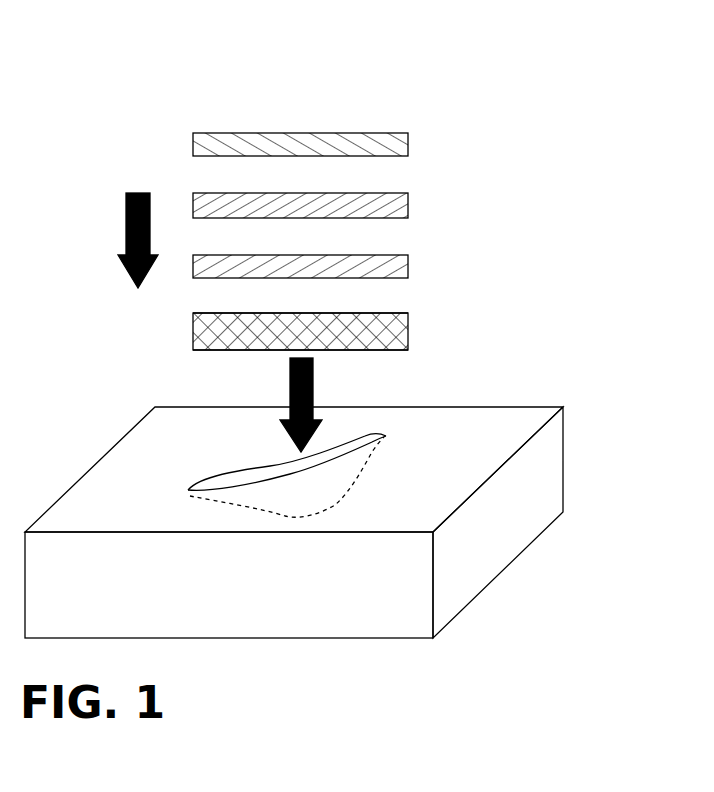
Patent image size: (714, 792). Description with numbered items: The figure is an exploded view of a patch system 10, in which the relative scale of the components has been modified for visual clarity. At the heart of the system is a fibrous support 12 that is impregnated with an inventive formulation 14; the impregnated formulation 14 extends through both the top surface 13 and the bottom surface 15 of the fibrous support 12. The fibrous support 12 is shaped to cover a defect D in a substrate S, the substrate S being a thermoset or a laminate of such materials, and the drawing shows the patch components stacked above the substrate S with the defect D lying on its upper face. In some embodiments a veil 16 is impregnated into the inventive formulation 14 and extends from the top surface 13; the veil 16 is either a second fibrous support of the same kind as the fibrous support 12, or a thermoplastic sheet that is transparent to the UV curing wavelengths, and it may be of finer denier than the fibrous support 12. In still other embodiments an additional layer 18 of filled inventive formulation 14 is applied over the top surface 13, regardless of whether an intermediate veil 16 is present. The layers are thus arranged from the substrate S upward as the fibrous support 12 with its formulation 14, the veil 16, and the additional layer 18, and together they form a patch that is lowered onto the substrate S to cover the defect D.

The patch system 10 is at (126, 93).
The fibrous support 12 is at (425, 330).
The top surface 13 is at (408, 316).
The inventive formulation 14 is at (408, 266).
The bottom surface 15 is at (408, 345).
The veil 16 is at (408, 205).
The additional layer 18 is at (408, 145).
The defect D is at (386, 436).
The substrate S is at (563, 455).